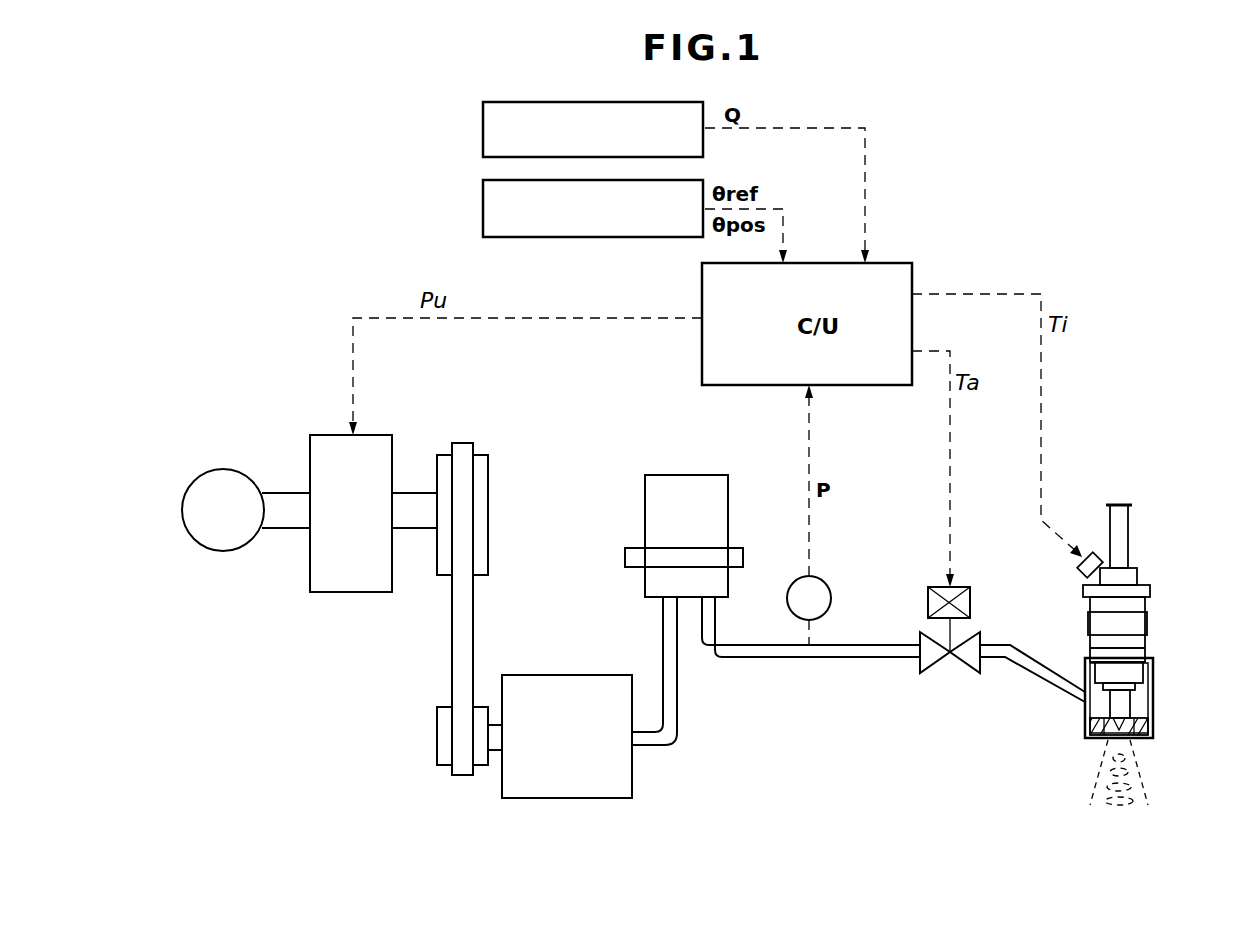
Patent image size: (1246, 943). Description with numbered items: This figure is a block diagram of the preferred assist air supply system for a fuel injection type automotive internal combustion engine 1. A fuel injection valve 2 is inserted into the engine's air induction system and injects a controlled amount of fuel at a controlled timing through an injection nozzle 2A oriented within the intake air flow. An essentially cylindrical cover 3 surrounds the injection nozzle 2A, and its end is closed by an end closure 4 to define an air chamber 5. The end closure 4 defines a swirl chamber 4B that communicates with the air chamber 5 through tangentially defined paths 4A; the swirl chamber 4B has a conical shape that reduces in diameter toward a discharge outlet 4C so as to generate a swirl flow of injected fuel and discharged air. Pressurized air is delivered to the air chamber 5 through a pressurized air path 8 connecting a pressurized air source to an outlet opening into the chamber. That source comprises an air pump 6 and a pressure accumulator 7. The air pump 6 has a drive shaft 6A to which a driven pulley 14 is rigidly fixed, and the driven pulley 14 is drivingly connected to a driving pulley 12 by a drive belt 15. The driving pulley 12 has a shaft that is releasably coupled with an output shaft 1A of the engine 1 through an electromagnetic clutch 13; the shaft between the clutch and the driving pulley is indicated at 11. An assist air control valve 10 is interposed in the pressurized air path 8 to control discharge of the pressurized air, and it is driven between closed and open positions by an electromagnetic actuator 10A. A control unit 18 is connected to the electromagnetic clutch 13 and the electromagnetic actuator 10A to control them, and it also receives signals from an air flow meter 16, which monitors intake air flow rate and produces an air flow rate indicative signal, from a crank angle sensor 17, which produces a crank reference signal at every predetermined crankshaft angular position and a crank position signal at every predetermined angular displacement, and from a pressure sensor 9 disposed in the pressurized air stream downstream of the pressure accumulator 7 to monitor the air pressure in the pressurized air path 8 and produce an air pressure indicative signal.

The internal combustion engine 1 is at (212, 478).
The output shaft 1A is at (280, 530).
The fuel injection valve 2 is at (1140, 620).
The injection nozzle 2A is at (1125, 700).
The cylindrical cover 3 is at (1146, 682).
The end closure 4 is at (1142, 736).
The tangentially defined paths 4A is at (1140, 726).
The swirl chamber 4B is at (1125, 722).
The discharge outlet 4C is at (1110, 745).
The air chamber 5 is at (1080, 708).
The air pump 6 is at (627, 775).
The drive shaft 6A is at (495, 752).
The pressure accumulator 7 is at (658, 480).
The pressurized air path 8 is at (795, 658).
The pressure sensor 9 is at (828, 588).
The assist air control valve 10 is at (938, 656).
The electromagnetic actuator 10A is at (966, 590).
The drive shaft 11 is at (420, 530).
The driving pulley 12 is at (483, 475).
The electromagnetic clutch 13 is at (338, 594).
The driven pulley 14 is at (443, 742).
The drive belt 15 is at (460, 646).
The air flow meter 16 is at (483, 120).
The crank angle sensor 17 is at (483, 200).
The control unit 18 is at (893, 262).